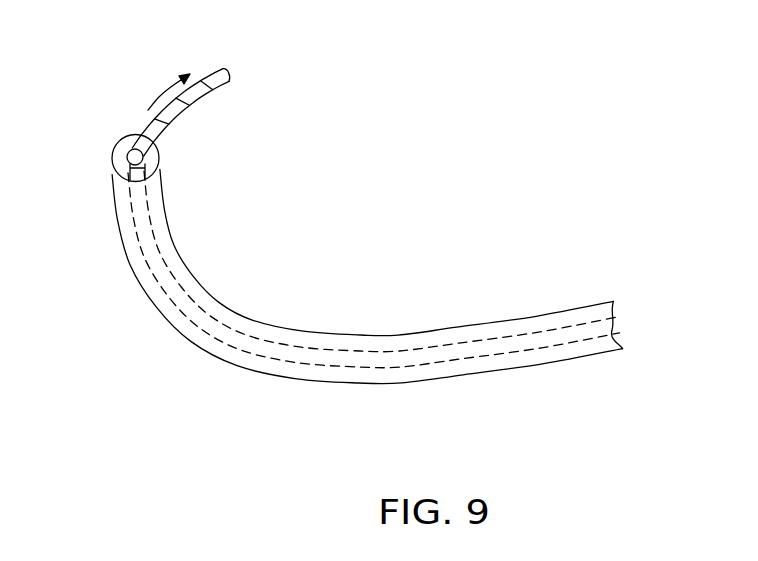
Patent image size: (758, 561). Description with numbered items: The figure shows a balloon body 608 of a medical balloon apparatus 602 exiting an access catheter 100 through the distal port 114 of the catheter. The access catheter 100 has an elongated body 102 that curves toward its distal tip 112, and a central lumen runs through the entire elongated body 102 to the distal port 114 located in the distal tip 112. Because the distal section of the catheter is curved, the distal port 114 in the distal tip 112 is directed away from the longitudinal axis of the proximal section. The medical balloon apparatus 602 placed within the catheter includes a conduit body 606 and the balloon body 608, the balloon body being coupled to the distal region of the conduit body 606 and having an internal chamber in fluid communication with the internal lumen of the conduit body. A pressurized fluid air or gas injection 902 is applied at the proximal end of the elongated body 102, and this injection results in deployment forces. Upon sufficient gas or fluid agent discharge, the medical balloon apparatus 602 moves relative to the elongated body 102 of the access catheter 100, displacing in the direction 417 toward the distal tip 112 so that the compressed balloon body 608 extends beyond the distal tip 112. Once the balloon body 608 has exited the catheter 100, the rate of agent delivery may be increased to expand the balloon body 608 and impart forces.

The access catheter 100 is at (418, 243).
The elongated body 102 is at (247, 370).
The distal tip 112 is at (112, 158).
The distal port 114 is at (158, 157).
The direction of deployment 417 is at (163, 94).
The medical balloon apparatus 602 is at (166, 291).
The conduit body 606 is at (425, 350).
The balloon body 608 is at (229, 74).
The pressurized fluid air or gas injection 902 is at (623, 326).